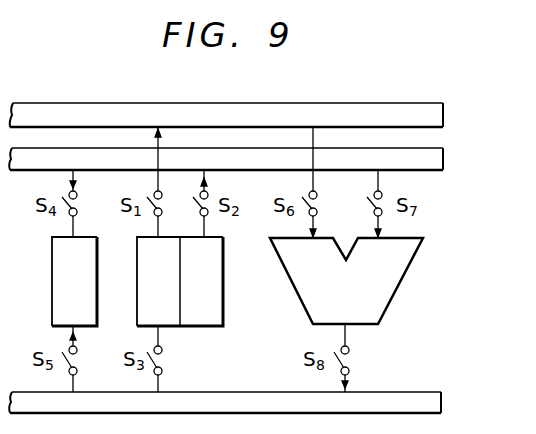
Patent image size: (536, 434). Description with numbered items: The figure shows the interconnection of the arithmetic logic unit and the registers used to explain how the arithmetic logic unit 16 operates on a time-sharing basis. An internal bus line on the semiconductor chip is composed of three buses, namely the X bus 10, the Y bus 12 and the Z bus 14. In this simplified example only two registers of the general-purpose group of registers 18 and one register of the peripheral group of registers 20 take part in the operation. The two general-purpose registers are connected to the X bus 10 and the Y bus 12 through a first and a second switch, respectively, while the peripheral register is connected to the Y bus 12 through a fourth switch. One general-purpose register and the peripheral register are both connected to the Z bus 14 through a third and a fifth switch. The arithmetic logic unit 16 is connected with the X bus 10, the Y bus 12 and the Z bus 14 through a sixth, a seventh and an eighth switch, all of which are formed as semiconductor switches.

The X bus 10 is at (445, 113).
The Y bus 12 is at (445, 157).
The Z bus 14 is at (443, 399).
The arithmetic logic unit 16 is at (405, 280).
The group of registers 18 is at (202, 326).
The group of registers 20 is at (52, 262).